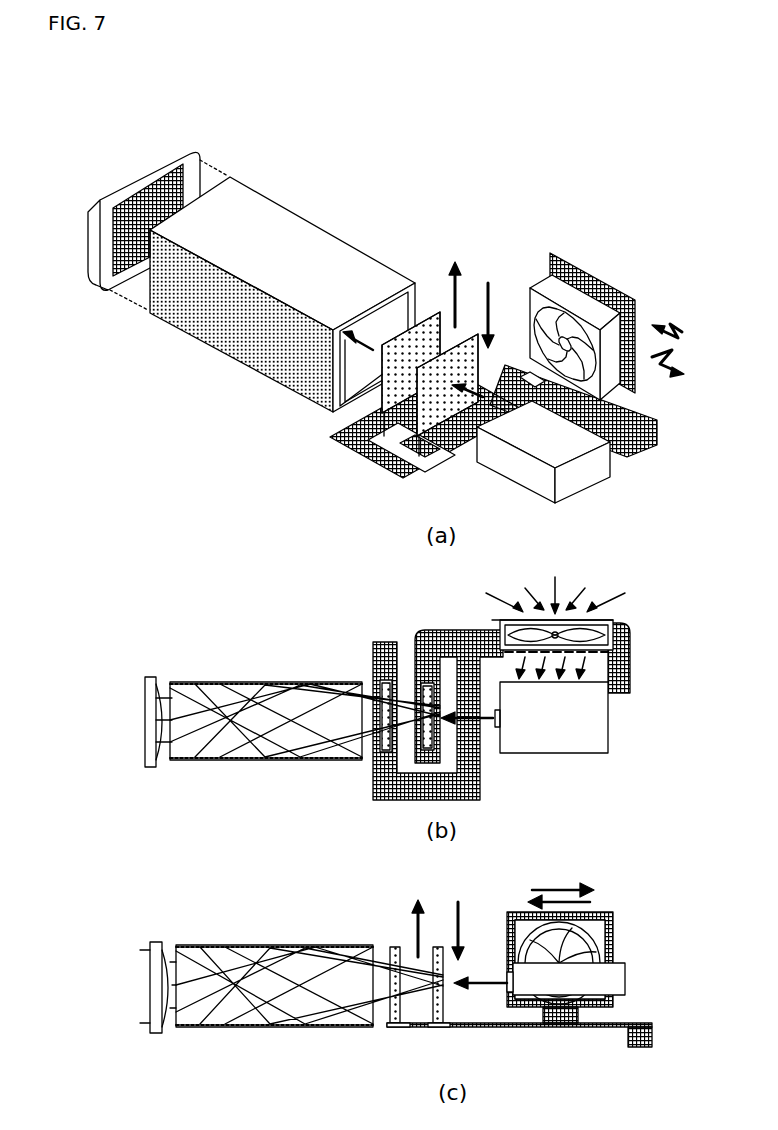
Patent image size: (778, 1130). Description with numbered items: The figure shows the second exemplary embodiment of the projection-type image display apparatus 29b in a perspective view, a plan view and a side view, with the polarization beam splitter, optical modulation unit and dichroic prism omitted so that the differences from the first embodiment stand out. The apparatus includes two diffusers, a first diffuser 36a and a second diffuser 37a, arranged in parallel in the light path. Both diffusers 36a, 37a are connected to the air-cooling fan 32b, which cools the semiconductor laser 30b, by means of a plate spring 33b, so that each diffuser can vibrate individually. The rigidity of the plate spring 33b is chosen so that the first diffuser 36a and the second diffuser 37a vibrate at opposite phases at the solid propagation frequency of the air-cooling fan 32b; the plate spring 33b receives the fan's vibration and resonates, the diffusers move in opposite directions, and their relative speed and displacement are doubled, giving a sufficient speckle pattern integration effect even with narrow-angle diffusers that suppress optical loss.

The projection-type image display apparatus 29b is at (505, 188).
The semiconductor laser 30b is at (525, 468).
The air-cooling fan 32b is at (583, 290).
The plate spring 33b is at (407, 470).
The first diffuser 36a is at (412, 428).
The second diffuser 37a is at (382, 390).